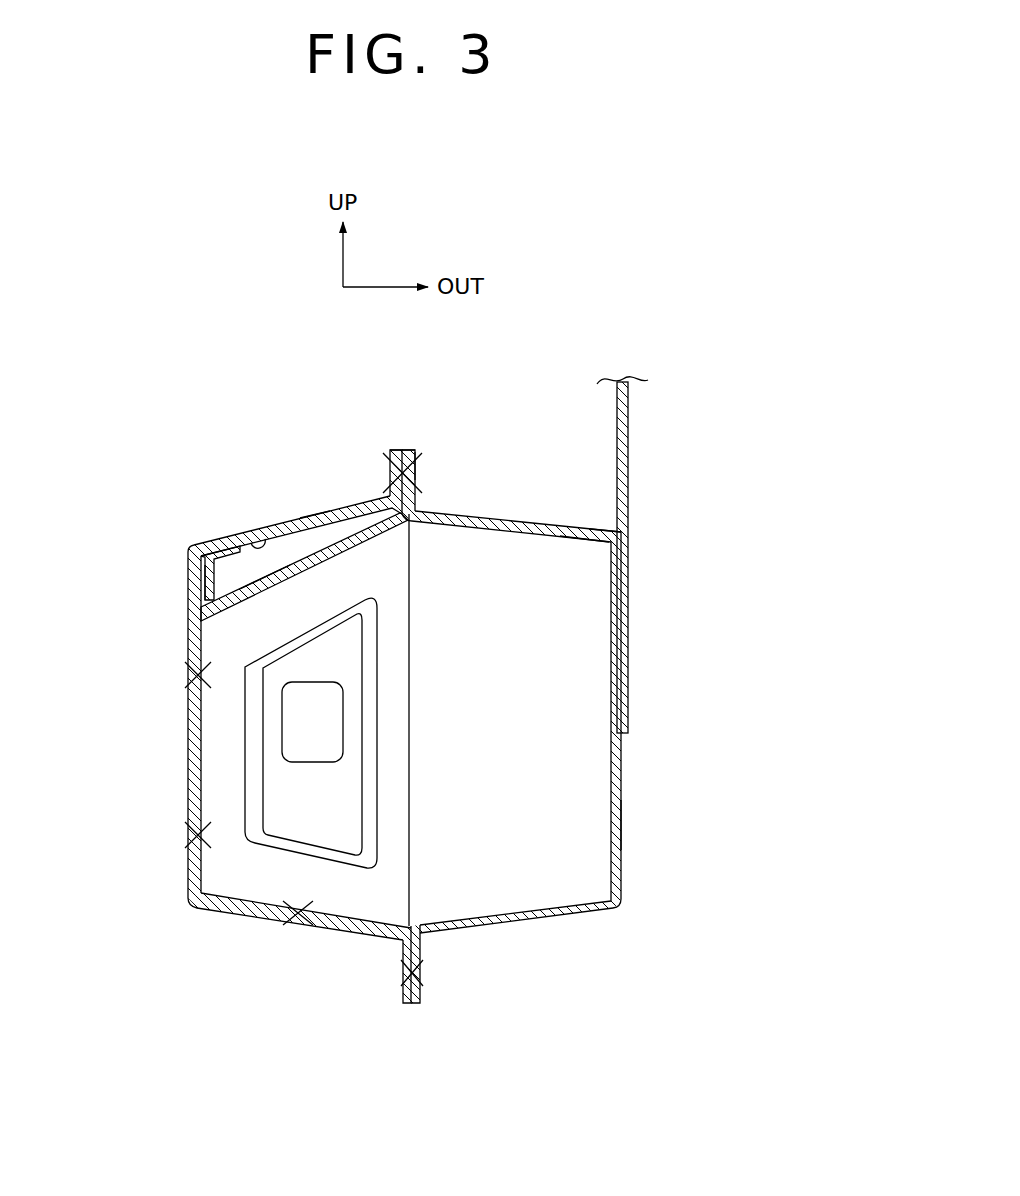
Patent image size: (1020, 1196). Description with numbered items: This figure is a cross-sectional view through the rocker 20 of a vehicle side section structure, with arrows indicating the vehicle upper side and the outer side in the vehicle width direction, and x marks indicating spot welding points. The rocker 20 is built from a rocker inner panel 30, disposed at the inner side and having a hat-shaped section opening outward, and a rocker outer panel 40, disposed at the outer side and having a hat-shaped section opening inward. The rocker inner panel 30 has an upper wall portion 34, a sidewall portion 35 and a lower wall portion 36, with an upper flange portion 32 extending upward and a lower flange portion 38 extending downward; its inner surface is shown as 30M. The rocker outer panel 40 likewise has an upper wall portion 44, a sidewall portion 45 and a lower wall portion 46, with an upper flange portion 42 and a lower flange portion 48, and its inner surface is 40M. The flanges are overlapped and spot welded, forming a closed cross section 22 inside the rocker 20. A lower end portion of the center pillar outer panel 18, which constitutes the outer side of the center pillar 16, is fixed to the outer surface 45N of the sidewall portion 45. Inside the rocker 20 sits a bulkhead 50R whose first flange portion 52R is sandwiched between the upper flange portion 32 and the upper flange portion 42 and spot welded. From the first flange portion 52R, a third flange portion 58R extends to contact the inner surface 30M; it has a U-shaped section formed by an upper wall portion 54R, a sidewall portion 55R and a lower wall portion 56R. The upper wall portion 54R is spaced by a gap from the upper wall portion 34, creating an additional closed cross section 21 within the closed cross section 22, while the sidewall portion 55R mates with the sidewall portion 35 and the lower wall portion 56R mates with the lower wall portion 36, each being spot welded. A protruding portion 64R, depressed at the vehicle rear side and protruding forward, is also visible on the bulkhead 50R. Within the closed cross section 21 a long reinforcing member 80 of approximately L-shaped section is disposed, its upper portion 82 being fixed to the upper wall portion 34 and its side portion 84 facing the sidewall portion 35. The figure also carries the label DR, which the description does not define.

The center pillar 16 is at (630, 420).
The center pillar outer panel 18 is at (628, 461).
The rocker 20 is at (521, 464).
The closed cross section 21 is at (233, 583).
The closed cross section 22 is at (520, 601).
The rocker inner panel 30 is at (241, 528).
The inner surface 30M is at (262, 523).
The upper flange portion 32 is at (391, 456).
The upper wall portion 34 is at (316, 512).
The sidewall portion 35 is at (190, 655).
The lower wall portion 36 is at (273, 923).
The lower flange portion 38 is at (398, 953).
The rocker outer panel 40 is at (554, 526).
The inner surface 40M is at (558, 542).
The upper flange portion 42 is at (418, 468).
The upper wall portion 44 is at (610, 533).
The sidewall portion 45 is at (622, 768).
The outer surface 45N is at (622, 821).
The lower wall portion 46 is at (548, 917).
The lower flange portion 48 is at (422, 953).
The bulkhead 50R is at (415, 662).
The first flange portion 52R is at (399, 449).
The upper wall portion 54R is at (264, 577).
The sidewall portion 55R is at (208, 732).
The lower wall portion 56R is at (260, 896).
The third flange portion 58R is at (308, 574).
The protruding portion 64R is at (372, 740).
The reinforcing member 80 is at (210, 453).
The upper portion 82 is at (222, 537).
The side portion 84 is at (197, 557).
The door rear direction DR is at (416, 456).